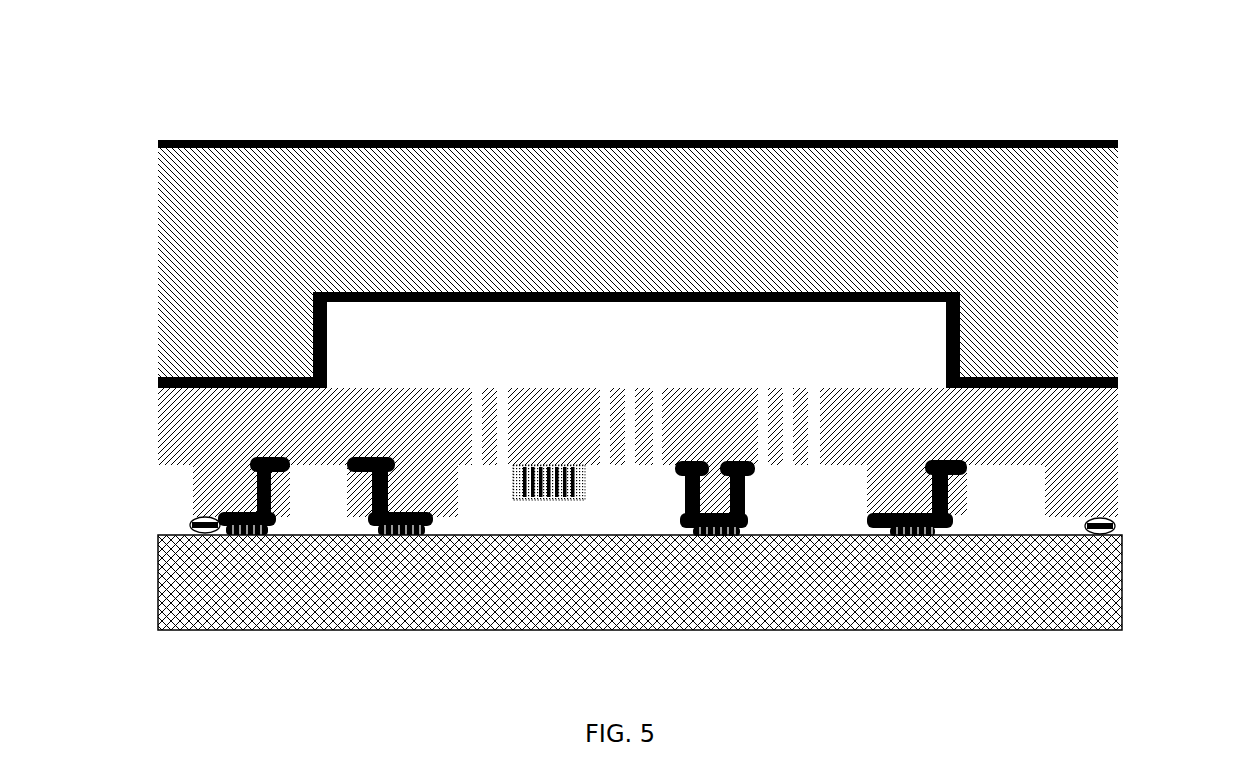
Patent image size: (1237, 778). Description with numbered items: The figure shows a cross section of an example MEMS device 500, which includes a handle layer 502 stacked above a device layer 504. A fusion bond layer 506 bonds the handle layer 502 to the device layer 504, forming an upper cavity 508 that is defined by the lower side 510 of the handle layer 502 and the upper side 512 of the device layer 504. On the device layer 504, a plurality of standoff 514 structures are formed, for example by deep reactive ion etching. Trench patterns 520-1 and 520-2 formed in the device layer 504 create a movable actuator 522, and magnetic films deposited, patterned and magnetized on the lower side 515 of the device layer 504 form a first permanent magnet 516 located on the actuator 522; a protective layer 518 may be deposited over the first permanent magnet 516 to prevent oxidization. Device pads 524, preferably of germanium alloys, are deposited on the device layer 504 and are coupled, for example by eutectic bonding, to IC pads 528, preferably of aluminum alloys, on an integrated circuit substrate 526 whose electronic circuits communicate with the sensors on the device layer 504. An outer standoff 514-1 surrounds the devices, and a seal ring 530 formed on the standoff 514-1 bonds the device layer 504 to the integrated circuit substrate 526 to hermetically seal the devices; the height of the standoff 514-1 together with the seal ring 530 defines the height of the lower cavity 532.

The MEMS device 500 is at (472, 95).
The handle layer 502 is at (197, 250).
The device layer 504 is at (182, 430).
The fusion bond layer 506 is at (173, 380).
The upper cavity 508 is at (380, 340).
The lower side of the handle layer 510 is at (678, 297).
The upper side of the device layer 512 is at (923, 388).
The standoff 514 is at (412, 483).
The standoff 514-1 is at (205, 495).
The lower side of the device layer 515 is at (590, 465).
The first permanent magnet 516 is at (577, 487).
The protective layer 518 is at (522, 492).
The trench pattern 520-1 is at (500, 398).
The trench pattern 520-2 is at (605, 398).
The actuator 522 is at (560, 402).
The device pads 524 is at (270, 492).
The integrated circuit substrate 526 is at (182, 605).
The IC pads 528 is at (380, 528).
The seal ring 530 is at (195, 522).
The lower cavity 532 is at (538, 518).